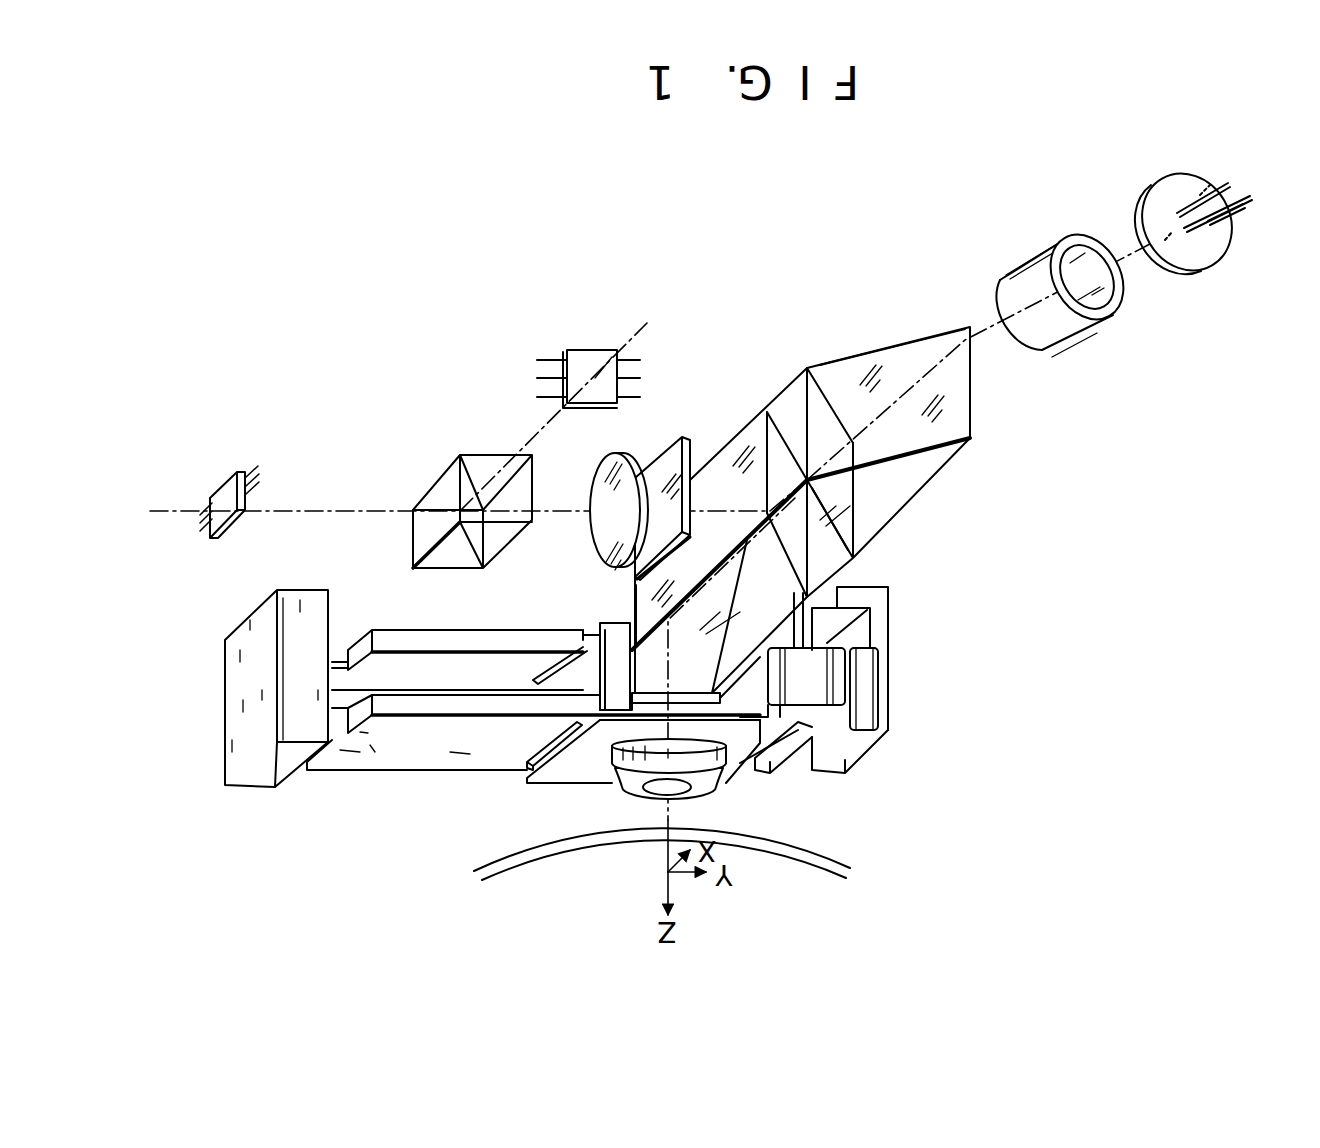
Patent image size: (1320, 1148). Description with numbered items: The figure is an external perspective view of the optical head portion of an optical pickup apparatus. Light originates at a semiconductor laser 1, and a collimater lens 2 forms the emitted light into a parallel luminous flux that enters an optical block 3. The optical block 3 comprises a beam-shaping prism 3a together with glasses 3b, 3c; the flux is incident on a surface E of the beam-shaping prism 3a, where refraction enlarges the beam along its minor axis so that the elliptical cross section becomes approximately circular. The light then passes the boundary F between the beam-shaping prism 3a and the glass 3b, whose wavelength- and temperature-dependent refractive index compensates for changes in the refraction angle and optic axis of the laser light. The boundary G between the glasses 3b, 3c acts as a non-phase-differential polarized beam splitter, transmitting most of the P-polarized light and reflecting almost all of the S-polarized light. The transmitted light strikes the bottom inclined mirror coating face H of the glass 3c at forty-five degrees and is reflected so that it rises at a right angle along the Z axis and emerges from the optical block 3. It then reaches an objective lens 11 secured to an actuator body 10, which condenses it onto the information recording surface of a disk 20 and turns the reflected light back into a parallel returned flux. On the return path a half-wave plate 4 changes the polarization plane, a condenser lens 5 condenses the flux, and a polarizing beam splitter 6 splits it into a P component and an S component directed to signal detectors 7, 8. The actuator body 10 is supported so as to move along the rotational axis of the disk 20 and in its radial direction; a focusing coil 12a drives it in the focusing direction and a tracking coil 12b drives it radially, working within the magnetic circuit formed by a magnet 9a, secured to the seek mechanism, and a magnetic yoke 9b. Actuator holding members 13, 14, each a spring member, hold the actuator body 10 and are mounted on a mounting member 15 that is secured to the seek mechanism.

The semiconductor laser 1 is at (1170, 178).
The collimater lens 2 is at (1028, 258).
The optical block 3 is at (776, 482).
The beam-shaping prism 3a is at (845, 358).
The glass 3b is at (785, 392).
The glass 3c is at (742, 433).
The surface of the beam-shaping prism E is at (925, 345).
The boundary of the glasses 3a, 3b F is at (845, 498).
The boundary between glasses 3b, 3c G is at (800, 551).
The mirror coating face H is at (643, 603).
The half-wave plate 4 is at (680, 437).
The condenser lens 5 is at (600, 543).
The polarizing beam splitter 6 is at (447, 475).
The signal detector 7 is at (228, 482).
The signal detector 8 is at (585, 352).
The magnet 9a is at (820, 770).
The magnetic yoke 9b is at (888, 697).
The actuator body 10 is at (556, 782).
The objective lens 11 is at (688, 790).
The focusing coil 12a is at (830, 668).
The tracking coil 12b is at (838, 722).
The actuator holding member 13 is at (380, 762).
The actuator holding member 14 is at (428, 630).
The mounting member 15 is at (263, 778).
The disk 20 is at (518, 862).